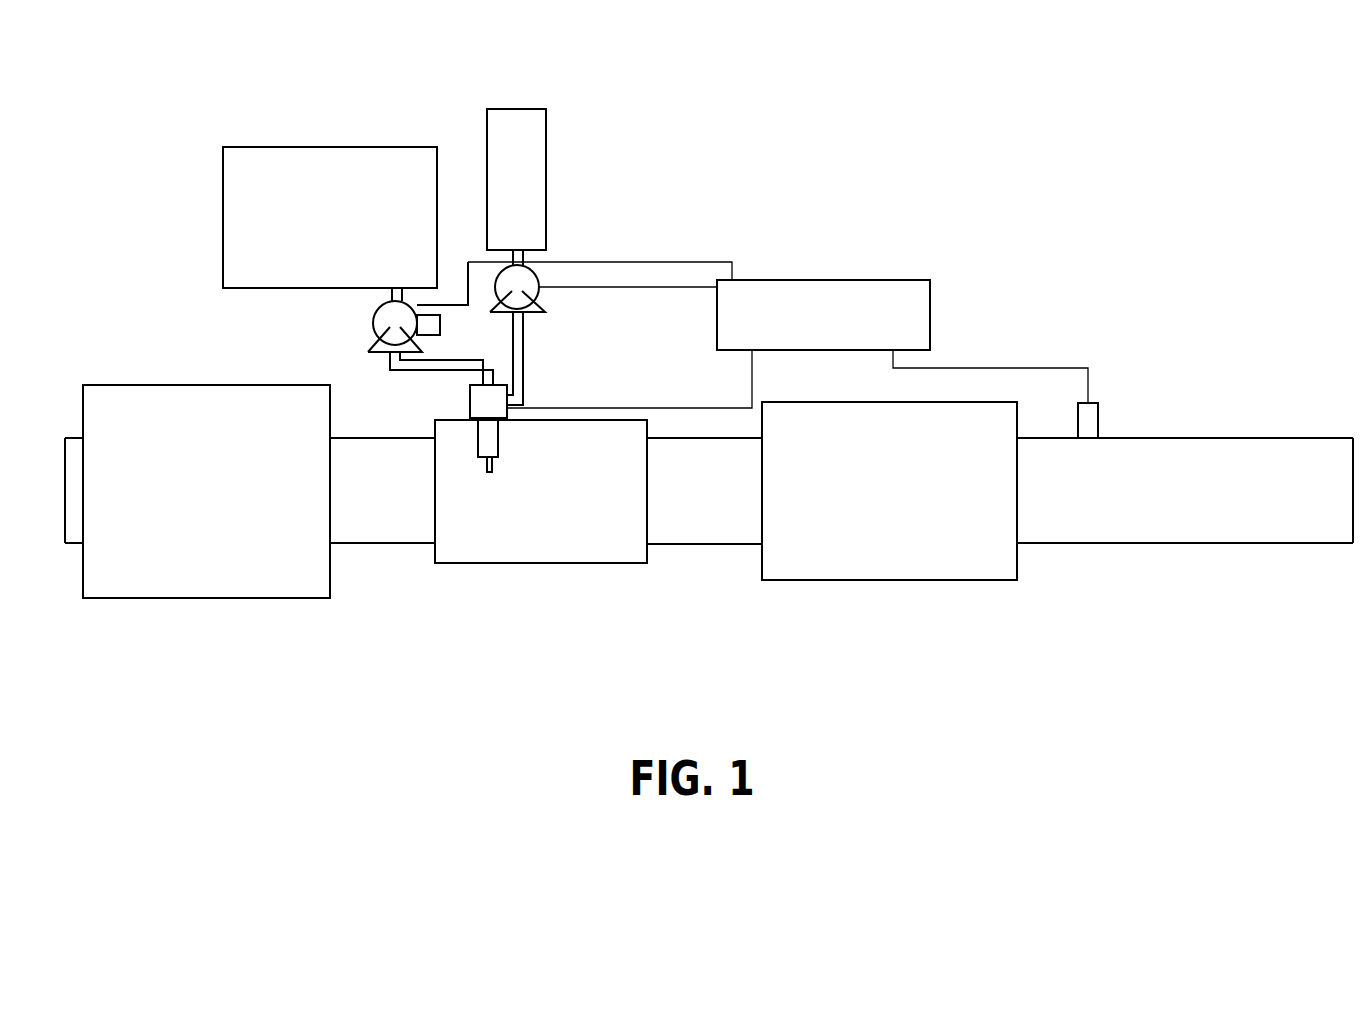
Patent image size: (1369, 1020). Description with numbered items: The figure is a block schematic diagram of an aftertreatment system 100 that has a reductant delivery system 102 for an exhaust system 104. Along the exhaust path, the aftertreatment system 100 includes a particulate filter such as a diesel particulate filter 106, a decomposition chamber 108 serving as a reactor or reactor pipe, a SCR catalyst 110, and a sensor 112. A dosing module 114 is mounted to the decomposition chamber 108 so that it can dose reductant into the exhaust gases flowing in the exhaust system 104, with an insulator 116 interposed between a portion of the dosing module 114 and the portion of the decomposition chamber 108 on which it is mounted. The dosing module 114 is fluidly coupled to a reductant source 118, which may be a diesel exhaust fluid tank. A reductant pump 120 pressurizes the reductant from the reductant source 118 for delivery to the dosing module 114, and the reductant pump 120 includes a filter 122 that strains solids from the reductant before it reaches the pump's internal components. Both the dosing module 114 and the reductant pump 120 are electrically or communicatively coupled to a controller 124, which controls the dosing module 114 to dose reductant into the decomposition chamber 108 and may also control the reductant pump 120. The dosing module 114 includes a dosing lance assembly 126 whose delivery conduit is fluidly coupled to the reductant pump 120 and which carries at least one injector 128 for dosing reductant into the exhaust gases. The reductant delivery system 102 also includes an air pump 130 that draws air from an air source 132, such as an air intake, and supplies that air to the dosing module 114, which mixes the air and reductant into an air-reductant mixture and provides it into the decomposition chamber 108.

The aftertreatment system 100 is at (970, 343).
The reductant delivery system 102 is at (590, 364).
The exhaust system 104 is at (438, 628).
The diesel particulate filter 106 is at (165, 598).
The decomposition chamber 108 is at (622, 563).
The SCR catalyst 110 is at (838, 580).
The sensor 112 is at (1112, 418).
The dosing module 114 is at (507, 404).
The insulator 116 is at (470, 412).
The reductant source 118 is at (283, 147).
The reductant pump 120 is at (373, 321).
The filter 122 is at (440, 325).
The controller 124 is at (778, 280).
The dosing lance assembly 126 is at (478, 447).
The injector 128 is at (492, 462).
The air pump 130 is at (537, 314).
The air source 132 is at (546, 140).